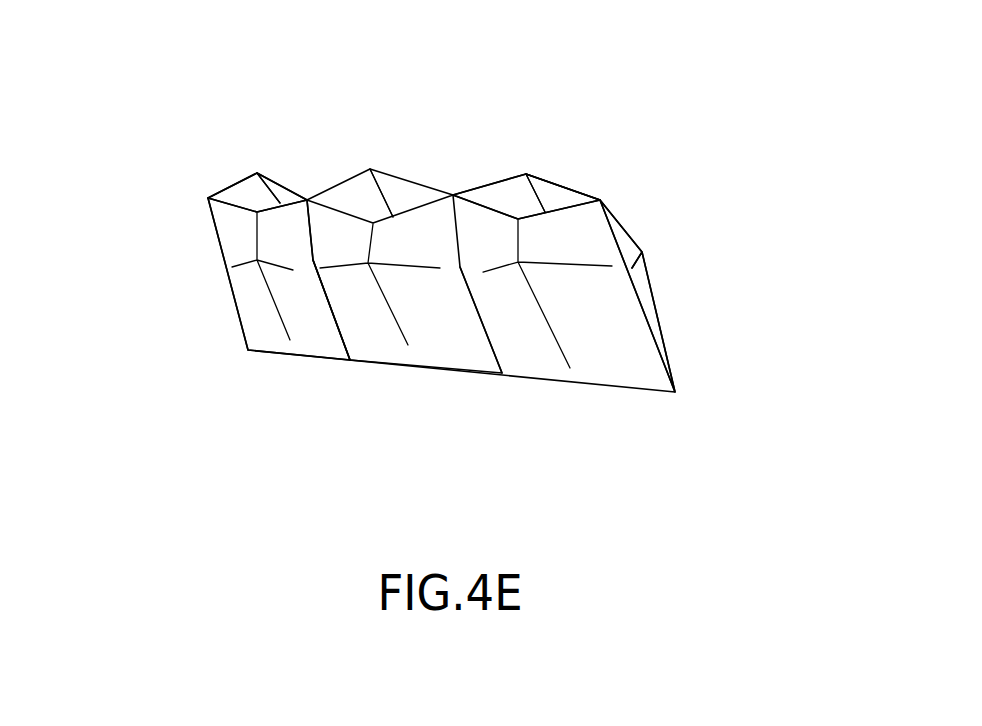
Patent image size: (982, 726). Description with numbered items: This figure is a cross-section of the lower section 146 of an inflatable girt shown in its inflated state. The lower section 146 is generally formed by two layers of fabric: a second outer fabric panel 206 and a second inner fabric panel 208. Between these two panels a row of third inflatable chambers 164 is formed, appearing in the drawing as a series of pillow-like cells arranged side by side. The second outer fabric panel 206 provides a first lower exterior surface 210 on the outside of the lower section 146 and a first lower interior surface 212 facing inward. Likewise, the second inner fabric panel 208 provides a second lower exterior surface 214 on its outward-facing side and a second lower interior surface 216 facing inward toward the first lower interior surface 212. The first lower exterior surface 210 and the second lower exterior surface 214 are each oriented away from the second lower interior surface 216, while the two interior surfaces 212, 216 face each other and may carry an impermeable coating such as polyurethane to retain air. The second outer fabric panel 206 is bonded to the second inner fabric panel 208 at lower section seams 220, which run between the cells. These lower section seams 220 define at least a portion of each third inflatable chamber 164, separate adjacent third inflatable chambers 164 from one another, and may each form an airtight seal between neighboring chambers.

The lower section 146 is at (175, 110).
The third inflatable chamber 164 is at (280, 176).
The second outer fabric panel 206 is at (257, 305).
The second inner fabric panel 208 is at (625, 243).
The first lower exterior surface 210 is at (445, 315).
The first lower interior surface 212 is at (235, 203).
The second lower exterior surface 214 is at (578, 190).
The second lower interior surface 216 is at (547, 188).
The lower section seam 220 is at (222, 265).